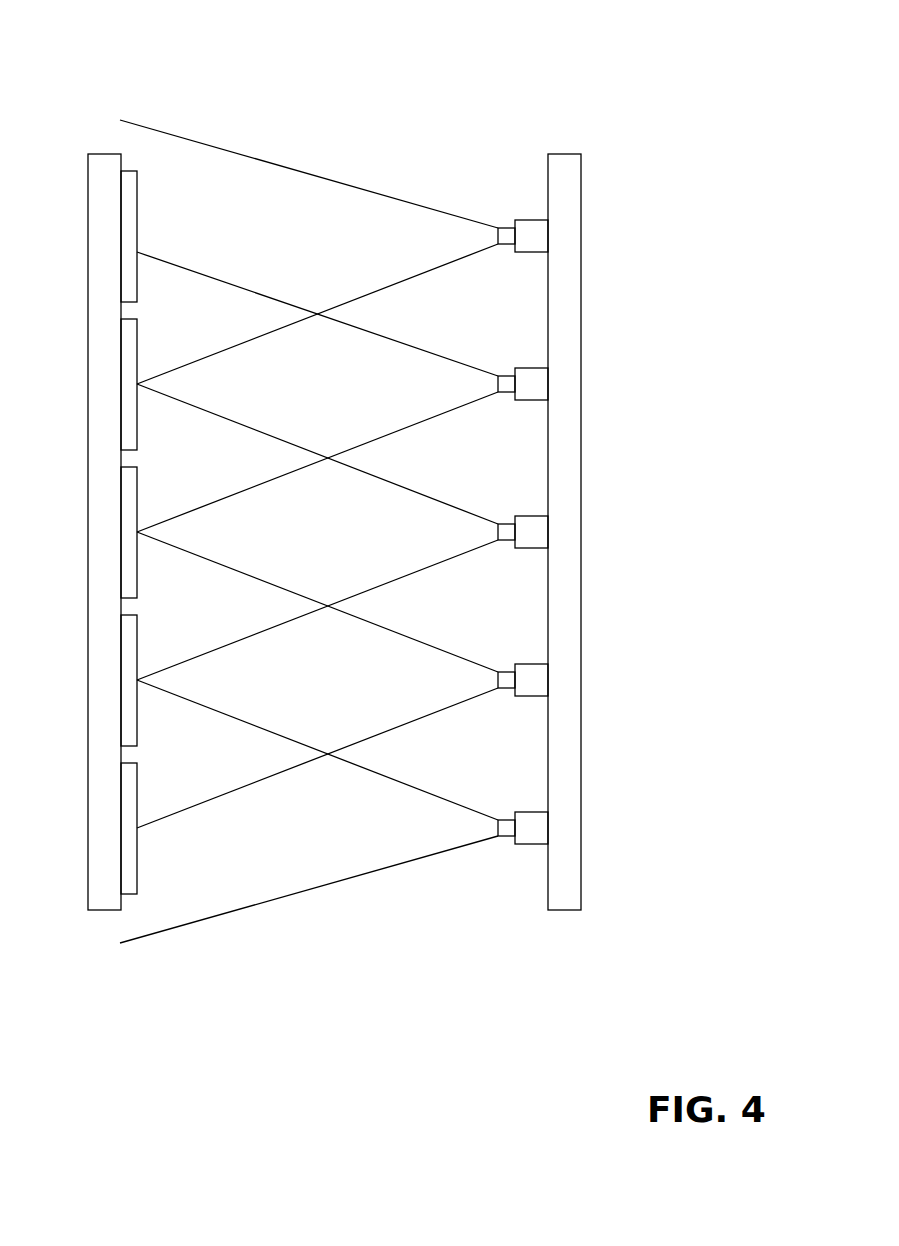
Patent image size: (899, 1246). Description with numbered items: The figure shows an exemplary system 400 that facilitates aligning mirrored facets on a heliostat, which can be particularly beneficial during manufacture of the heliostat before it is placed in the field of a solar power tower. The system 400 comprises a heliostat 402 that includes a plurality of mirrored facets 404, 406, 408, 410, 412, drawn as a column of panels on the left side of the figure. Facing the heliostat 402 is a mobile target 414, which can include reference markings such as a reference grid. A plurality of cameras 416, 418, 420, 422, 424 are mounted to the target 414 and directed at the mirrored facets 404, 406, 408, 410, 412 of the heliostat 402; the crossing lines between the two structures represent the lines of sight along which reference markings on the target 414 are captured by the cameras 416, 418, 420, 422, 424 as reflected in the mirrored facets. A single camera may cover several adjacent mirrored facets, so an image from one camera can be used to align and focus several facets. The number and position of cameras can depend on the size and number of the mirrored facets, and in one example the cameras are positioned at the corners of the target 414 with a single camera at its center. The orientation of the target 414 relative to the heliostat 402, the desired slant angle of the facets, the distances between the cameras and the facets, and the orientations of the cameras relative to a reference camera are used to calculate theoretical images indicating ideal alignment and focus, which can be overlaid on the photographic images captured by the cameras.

The system 400 is at (182, 44).
The heliostat 402 is at (88, 218).
The mirrored facet 404 is at (138, 218).
The mirrored facet 406 is at (138, 350).
The mirrored facet 408 is at (138, 498).
The mirrored facet 410 is at (138, 646).
The mirrored facet 412 is at (138, 794).
The target 414 is at (582, 185).
The camera 416 is at (523, 219).
The camera 418 is at (528, 367).
The camera 420 is at (523, 515).
The camera 422 is at (530, 663).
The camera 424 is at (530, 811).